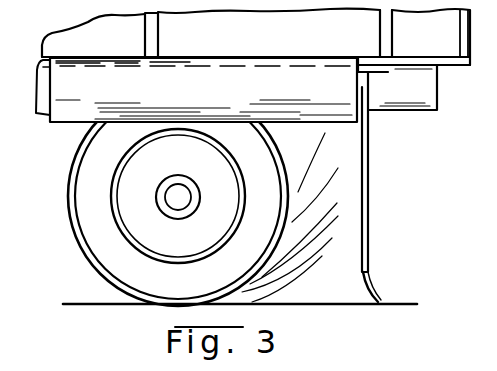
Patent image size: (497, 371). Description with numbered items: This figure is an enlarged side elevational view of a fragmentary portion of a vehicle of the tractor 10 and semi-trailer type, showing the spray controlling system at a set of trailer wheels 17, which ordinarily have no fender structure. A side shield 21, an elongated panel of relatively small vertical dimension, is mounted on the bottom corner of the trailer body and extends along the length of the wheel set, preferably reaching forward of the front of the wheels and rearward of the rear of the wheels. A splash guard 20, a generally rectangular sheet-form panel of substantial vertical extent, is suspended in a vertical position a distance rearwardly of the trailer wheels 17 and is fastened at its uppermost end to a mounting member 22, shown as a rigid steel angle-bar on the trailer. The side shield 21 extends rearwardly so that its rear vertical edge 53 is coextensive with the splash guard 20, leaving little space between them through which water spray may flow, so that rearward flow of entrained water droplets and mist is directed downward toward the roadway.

The tractor 10 is at (222, 44).
The trailer wheels 17 is at (80, 253).
The splash guard 20 is at (370, 157).
The side shield 21 is at (90, 108).
The mounting member 22 is at (364, 81).
The rear vertical edge 53 is at (371, 57).